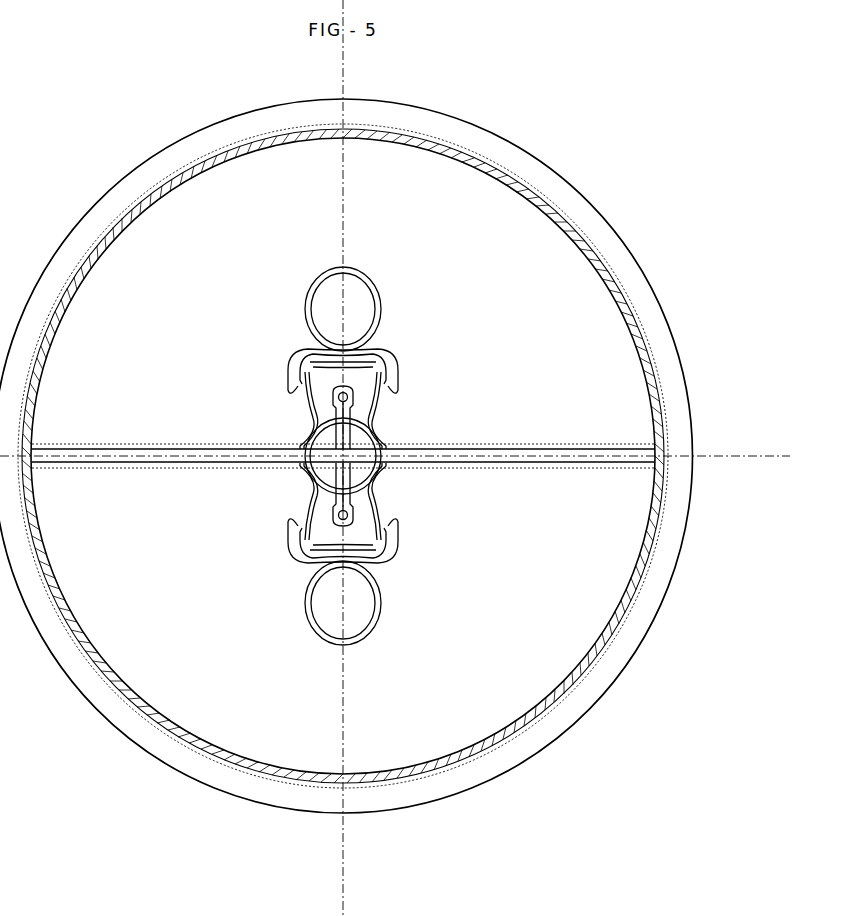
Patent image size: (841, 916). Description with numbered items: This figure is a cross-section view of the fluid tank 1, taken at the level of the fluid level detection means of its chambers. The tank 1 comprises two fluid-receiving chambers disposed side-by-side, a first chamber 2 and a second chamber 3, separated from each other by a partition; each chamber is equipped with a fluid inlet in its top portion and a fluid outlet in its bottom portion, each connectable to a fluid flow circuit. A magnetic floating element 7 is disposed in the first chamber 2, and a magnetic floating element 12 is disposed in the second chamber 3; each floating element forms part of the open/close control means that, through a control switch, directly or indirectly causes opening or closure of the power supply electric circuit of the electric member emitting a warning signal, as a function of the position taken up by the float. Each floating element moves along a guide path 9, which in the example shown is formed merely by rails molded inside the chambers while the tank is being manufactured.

The fluid tank 1 is at (633, 243).
The first chamber 2 is at (596, 301).
The second chamber 3 is at (588, 587).
The magnetic floating element 7 is at (375, 407).
The guide path 9 is at (383, 356).
The magnetic floating element 12 is at (375, 503).